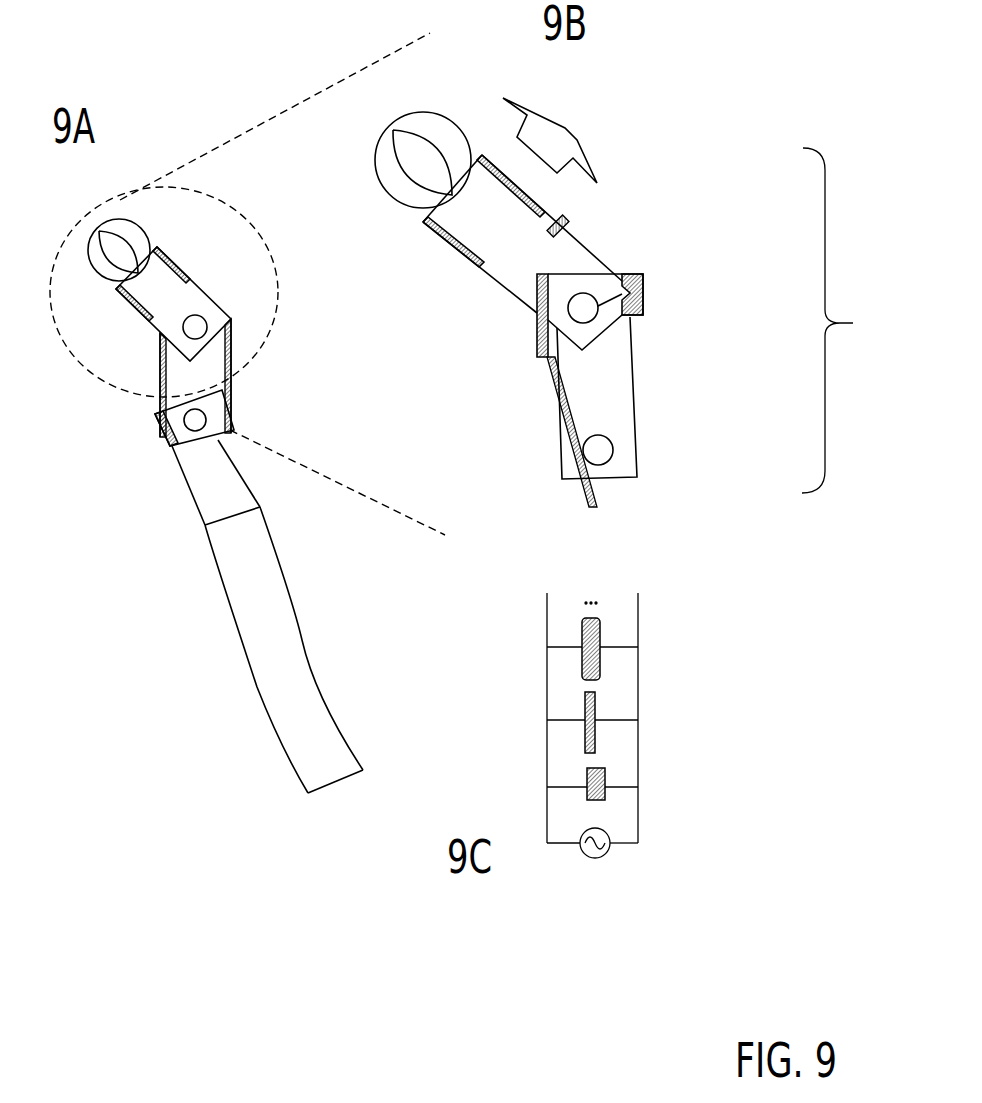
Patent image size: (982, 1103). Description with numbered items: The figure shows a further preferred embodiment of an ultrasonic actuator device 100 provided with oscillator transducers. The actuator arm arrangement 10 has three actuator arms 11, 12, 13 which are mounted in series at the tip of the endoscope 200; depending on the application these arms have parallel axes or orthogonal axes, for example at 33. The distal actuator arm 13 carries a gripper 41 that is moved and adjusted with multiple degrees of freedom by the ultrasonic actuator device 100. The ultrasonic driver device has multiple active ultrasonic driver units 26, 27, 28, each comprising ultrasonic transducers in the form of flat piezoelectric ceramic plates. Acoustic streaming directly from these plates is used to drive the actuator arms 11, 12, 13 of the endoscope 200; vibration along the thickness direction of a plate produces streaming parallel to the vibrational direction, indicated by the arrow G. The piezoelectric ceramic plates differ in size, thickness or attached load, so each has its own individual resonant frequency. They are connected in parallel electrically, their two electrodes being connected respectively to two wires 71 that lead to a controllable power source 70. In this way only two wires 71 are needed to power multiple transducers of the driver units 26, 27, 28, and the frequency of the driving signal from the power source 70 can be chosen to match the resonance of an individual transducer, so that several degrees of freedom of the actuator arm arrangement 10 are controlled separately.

The actuator arm arrangement 10 is at (893, 336).
The actuator arm 11 is at (198, 475).
The actuator arm 12 is at (220, 357).
The distal actuator arm 13 is at (233, 323).
The ultrasonic driver unit 26 is at (162, 438).
The ultrasonic driver unit 27 is at (160, 348).
The ultrasonic driver unit 28 is at (127, 300).
The orthogonal axes 33 is at (643, 313).
The gripper 41 is at (467, 128).
The controllable power source 70 is at (610, 905).
The wires 71 is at (553, 378).
The ultrasonic actuator device 100 is at (237, 259).
The endoscope 200 is at (290, 650).